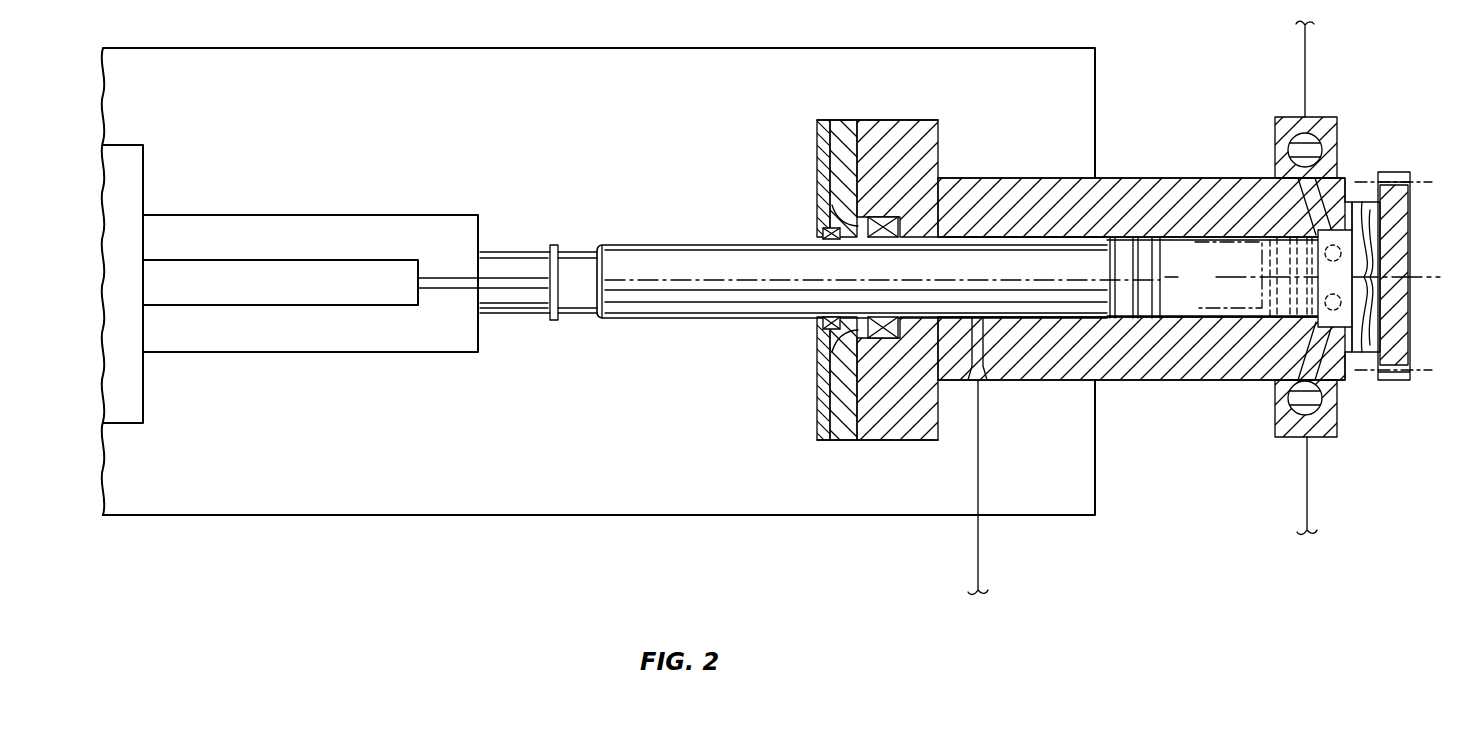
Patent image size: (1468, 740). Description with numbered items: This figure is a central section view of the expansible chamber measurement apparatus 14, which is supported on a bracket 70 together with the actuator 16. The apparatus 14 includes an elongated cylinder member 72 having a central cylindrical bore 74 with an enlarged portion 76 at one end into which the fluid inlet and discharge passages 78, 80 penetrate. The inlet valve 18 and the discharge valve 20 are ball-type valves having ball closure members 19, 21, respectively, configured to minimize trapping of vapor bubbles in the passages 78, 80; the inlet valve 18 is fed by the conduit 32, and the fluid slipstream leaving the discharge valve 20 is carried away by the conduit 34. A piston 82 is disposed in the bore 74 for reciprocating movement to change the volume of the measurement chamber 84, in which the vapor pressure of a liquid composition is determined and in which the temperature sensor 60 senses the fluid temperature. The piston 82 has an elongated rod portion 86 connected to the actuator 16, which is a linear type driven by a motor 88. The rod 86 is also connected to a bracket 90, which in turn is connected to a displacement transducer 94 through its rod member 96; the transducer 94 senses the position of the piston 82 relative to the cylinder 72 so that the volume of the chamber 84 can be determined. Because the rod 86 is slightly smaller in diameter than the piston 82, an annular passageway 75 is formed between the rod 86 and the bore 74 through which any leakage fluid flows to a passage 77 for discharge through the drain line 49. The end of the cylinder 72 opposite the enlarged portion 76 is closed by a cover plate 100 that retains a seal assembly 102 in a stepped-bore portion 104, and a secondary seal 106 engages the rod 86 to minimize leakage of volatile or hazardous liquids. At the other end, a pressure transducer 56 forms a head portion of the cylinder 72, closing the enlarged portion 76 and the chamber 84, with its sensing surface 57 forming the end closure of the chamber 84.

The apparatus 14 is at (1182, 395).
The actuator 16 is at (352, 352).
The inlet valve 18 is at (1275, 432).
The ball closure member 19 is at (1312, 440).
The discharge valve 20 is at (1275, 138).
The ball closure member 21 is at (1298, 117).
The conduit 32 is at (1308, 500).
The conduit 34 is at (1306, 72).
The drain line 49 is at (978, 540).
The pressure transducer 56 is at (1385, 343).
The sensing surface 57 is at (1395, 300).
The temperature sensor 60 is at (1385, 263).
The bracket 70 is at (748, 48).
The cylinder member 72 is at (1097, 175).
The central cylindrical bore 74 is at (1022, 238).
The annular passageway 75 is at (962, 240).
The enlarged portion 76 is at (1398, 233).
The passage 77 is at (990, 372).
The fluid inlet passage 78 is at (1347, 380).
The fluid discharge passage 80 is at (1346, 200).
The piston 82 is at (1135, 238).
The chamber 84 is at (1212, 292).
The rod portion 86 is at (700, 318).
The motor 88 is at (125, 423).
The bracket 90 is at (560, 300).
The displacement transducer 94 is at (300, 258).
The rod member 96 is at (433, 258).
The cover plate 100 is at (835, 440).
The seal assembly 102 is at (885, 380).
The stepped-bore portion 104 is at (822, 218).
The secondary seal 106 is at (820, 365).